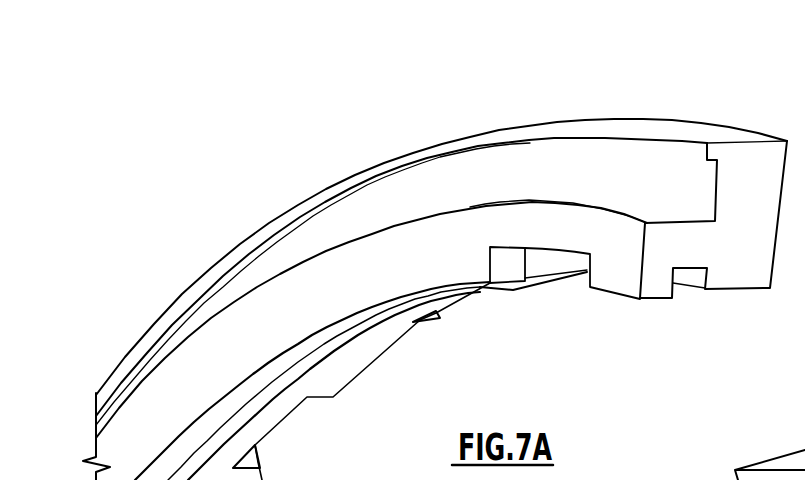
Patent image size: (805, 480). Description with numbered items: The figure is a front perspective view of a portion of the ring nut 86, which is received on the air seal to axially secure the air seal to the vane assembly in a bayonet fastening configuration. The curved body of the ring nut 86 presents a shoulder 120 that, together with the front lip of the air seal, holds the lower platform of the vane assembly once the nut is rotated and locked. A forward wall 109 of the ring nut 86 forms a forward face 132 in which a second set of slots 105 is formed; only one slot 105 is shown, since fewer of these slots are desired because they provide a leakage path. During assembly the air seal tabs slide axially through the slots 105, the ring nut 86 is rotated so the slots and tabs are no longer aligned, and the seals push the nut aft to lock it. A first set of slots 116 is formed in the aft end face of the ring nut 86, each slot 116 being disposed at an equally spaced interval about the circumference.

The ring nut 86 is at (705, 94).
The shoulder 120 is at (640, 135).
The forward wall 109 is at (627, 262).
The slot 105 is at (588, 285).
The forward face 132 is at (360, 265).
The first set of slots 116 is at (438, 315).